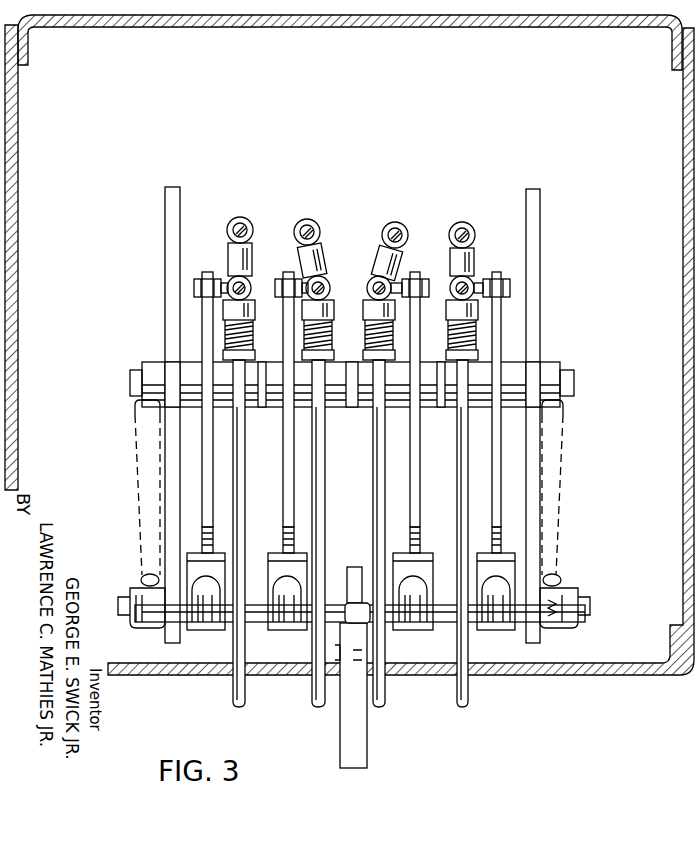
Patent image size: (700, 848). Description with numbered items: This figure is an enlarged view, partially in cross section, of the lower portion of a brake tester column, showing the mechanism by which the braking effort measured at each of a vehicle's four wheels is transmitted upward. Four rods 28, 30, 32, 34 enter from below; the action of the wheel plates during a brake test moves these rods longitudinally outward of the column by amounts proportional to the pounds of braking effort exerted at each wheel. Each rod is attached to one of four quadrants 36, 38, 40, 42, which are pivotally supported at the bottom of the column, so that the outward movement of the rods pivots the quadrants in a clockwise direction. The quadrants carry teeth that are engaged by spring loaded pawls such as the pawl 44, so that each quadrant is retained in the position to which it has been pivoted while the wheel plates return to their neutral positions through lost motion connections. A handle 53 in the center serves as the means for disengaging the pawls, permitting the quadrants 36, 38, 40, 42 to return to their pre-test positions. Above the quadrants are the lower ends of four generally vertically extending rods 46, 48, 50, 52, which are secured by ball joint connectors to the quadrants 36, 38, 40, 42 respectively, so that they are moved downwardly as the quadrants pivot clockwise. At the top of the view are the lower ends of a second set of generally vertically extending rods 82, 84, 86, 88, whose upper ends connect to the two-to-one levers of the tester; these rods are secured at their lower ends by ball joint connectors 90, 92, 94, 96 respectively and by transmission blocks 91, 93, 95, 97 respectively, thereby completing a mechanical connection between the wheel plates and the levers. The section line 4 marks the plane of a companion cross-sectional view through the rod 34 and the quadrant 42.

The section line 4- 4 is at (532, 691).
The rod 28 is at (236, 689).
The rod 30 is at (315, 689).
The rod 32 is at (386, 689).
The rod 34 is at (468, 689).
The quadrant 36 is at (208, 497).
The quadrant 38 is at (289, 498).
The quadrant 40 is at (415, 500).
The quadrant 42 is at (496, 500).
The pawl 44 is at (500, 568).
The vertically extending rod 46 is at (229, 282).
The vertically extending rod 48 is at (306, 282).
The vertically extending rod 50 is at (372, 283).
The vertically extending rod 52 is at (451, 283).
The handle 53 is at (364, 754).
The vertically extending rod 82 is at (244, 219).
The vertically extending rod 84 is at (313, 221).
The vertically extending rod 86 is at (400, 223).
The vertically extending rod 88 is at (466, 223).
The ball joint connector 90 is at (229, 227).
The transmission block 91 is at (251, 260).
The ball joint connector 92 is at (295, 228).
The transmission block 93 is at (323, 262).
The ball joint connector 94 is at (383, 231).
The transmission block 95 is at (398, 263).
The ball joint connector 96 is at (450, 231).
The transmission block 97 is at (472, 265).